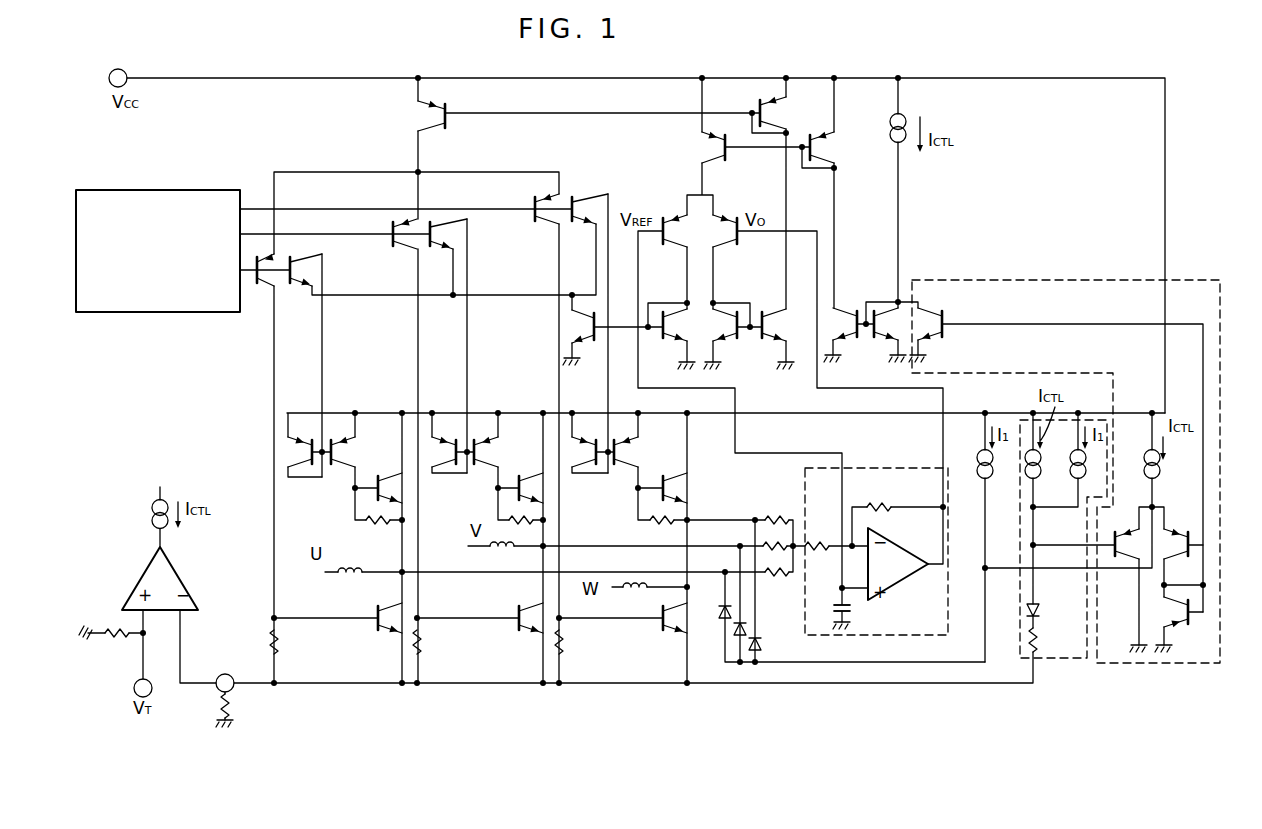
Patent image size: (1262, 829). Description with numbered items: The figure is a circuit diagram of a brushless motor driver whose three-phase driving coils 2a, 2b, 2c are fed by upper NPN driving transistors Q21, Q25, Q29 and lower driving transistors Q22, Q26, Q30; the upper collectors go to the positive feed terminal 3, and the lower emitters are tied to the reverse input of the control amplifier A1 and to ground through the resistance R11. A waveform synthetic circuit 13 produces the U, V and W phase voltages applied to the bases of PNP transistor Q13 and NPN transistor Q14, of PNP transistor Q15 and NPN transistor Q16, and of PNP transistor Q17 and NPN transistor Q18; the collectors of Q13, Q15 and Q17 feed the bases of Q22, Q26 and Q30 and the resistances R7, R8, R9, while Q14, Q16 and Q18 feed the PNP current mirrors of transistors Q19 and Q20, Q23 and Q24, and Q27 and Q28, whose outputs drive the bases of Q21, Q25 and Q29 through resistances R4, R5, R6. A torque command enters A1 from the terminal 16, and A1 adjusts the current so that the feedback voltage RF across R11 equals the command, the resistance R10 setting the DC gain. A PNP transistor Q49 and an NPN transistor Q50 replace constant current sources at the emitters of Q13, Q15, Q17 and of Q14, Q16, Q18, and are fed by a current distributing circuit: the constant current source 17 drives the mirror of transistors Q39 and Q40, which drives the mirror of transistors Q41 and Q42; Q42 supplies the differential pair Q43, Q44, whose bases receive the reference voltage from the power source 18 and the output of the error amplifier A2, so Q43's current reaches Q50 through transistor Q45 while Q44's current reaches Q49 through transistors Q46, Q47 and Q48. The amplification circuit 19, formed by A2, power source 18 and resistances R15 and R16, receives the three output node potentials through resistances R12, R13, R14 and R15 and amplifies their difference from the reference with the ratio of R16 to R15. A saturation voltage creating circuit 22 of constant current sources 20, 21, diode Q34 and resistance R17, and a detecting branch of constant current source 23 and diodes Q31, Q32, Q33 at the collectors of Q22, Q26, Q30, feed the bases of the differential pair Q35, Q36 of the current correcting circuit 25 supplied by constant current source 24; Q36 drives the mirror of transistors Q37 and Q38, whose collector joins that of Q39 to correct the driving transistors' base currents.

The positive feed terminal 3 is at (118, 68).
The waveform synthetic circuit 13 is at (158, 313).
The terminal 16 is at (133, 685).
The constant current source 17 is at (896, 152).
The power source 18 is at (855, 616).
The amplification circuit 19 is at (866, 469).
The constant current source 20 is at (1025, 466).
The constant current source 21 is at (1070, 478).
The bias circuit 22 is at (1048, 662).
The constant current source 23 is at (977, 463).
The constant current source 24 is at (1146, 455).
The current correcting circuit 25 is at (1176, 283).
The driving coil 2a is at (344, 580).
The driving coil 2b is at (489, 549).
The driving coil 2c is at (627, 591).
The control amplifier A1 is at (160, 555).
The error amplifier A2 is at (898, 564).
The feedback voltage RF is at (222, 668).
The resistance R4 is at (373, 530).
The resistance R5 is at (519, 510).
The resistance R6 is at (658, 531).
The resistance R7 is at (287, 642).
The resistance R8 is at (429, 642).
The resistance R9 is at (570, 642).
The resistance R10 is at (112, 644).
The resistance R11 is at (246, 703).
The resistance R12 is at (774, 584).
The resistance R13 is at (764, 543).
The resistance R14 is at (774, 510).
The resistance R15 is at (821, 557).
The resistance R16 is at (879, 496).
The resistance R17 is at (1052, 640).
The PNP transistor Q13 is at (263, 300).
The NPN transistor Q14 is at (298, 268).
The PNP transistor Q15 is at (392, 245).
The NPN transistor Q16 is at (446, 236).
The PNP transistor Q17 is at (536, 221).
The NPN transistor Q18 is at (577, 207).
The PNP transistor Q19 is at (299, 472).
The PNP transistor Q20 is at (354, 452).
The driving transistor Q21 is at (388, 480).
The driving transistor Q22 is at (372, 632).
The PNP transistor Q23 is at (452, 462).
The PNP transistor Q24 is at (499, 452).
The driving transistor Q25 is at (533, 480).
The driving transistor Q26 is at (517, 632).
The PNP transistor Q27 is at (592, 462).
The PNP transistor Q28 is at (641, 452).
The driving transistor Q29 is at (694, 488).
The driving transistor Q30 is at (671, 627).
The diode Q31 is at (722, 614).
The diode Q32 is at (731, 662).
The diode Q33 is at (763, 646).
The diode Q34 is at (1051, 601).
The PNP transistor Q35 is at (1112, 537).
The PNP transistor Q36 is at (1193, 533).
The NPN transistor Q37 is at (1182, 630).
The NPN transistor Q38 is at (949, 318).
The NPN transistor Q39 is at (882, 337).
The NPN transistor Q40 is at (843, 326).
The PNP transistor Q41 is at (840, 147).
The PNP transistor Q42 is at (692, 147).
The PNP transistor Q43 is at (664, 244).
The PNP transistor Q44 is at (734, 244).
The NPN transistor Q45 is at (664, 337).
The NPN transistor Q46 is at (735, 337).
The NPN transistor Q47 is at (789, 325).
The PNP transistor Q48 is at (786, 113).
The PNP transistor Q49 is at (443, 127).
The NPN transistor Q50 is at (575, 327).